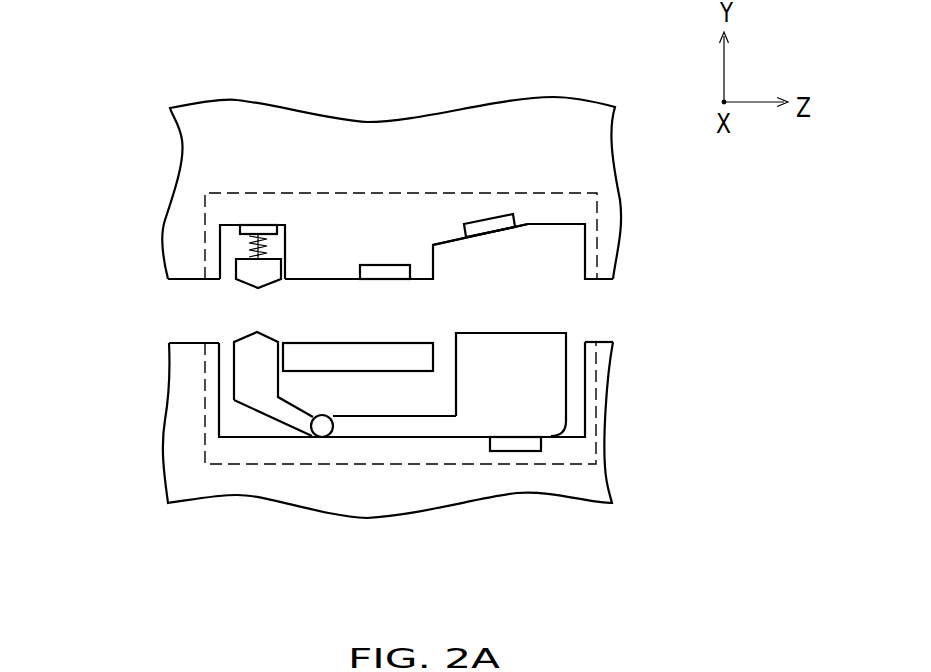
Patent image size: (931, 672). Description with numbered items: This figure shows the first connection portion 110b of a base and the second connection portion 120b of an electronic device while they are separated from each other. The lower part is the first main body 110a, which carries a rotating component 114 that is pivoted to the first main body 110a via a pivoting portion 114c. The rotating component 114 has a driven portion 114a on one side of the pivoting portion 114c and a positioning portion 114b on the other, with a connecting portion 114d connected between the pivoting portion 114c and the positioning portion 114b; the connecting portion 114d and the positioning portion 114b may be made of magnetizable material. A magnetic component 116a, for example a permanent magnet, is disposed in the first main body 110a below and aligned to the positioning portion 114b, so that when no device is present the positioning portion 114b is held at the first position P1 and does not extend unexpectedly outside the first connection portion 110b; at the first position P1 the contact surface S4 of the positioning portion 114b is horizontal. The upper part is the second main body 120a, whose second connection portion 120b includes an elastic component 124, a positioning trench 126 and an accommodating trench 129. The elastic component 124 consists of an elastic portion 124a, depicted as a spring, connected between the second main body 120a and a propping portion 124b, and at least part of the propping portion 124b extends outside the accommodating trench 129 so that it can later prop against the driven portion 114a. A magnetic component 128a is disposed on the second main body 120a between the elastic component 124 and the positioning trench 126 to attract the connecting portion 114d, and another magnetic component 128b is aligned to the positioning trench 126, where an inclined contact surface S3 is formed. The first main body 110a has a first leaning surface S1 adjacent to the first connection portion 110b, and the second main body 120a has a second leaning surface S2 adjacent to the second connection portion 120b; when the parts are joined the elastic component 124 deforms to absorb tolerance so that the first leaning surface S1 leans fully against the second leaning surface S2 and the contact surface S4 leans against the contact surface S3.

The first main body 110a is at (178, 470).
The first connection portion 110b is at (596, 402).
The rotating component 114 is at (399, 476).
The driven portion 114a is at (252, 360).
The positioning portion 114b is at (497, 449).
The pivoting portion 114c is at (322, 426).
The connecting portion 114d is at (389, 425).
The magnetic component 116a is at (518, 443).
The second main body 120a is at (183, 140).
The second connection portion 120b is at (600, 200).
The elastic component 124 is at (294, 149).
The elastic portion 124a is at (278, 235).
The propping portion 124b is at (273, 272).
The positioning trench 126 is at (587, 250).
The magnetic component 128a is at (387, 272).
The magnetic component 128b is at (483, 227).
The accommodating trench 129 is at (218, 247).
The first leaning surface S1 is at (193, 340).
The second leaning surface S2 is at (187, 280).
The inclined contact surface S3 is at (528, 242).
The contact surface S4 is at (527, 332).
The first position P1 is at (579, 333).